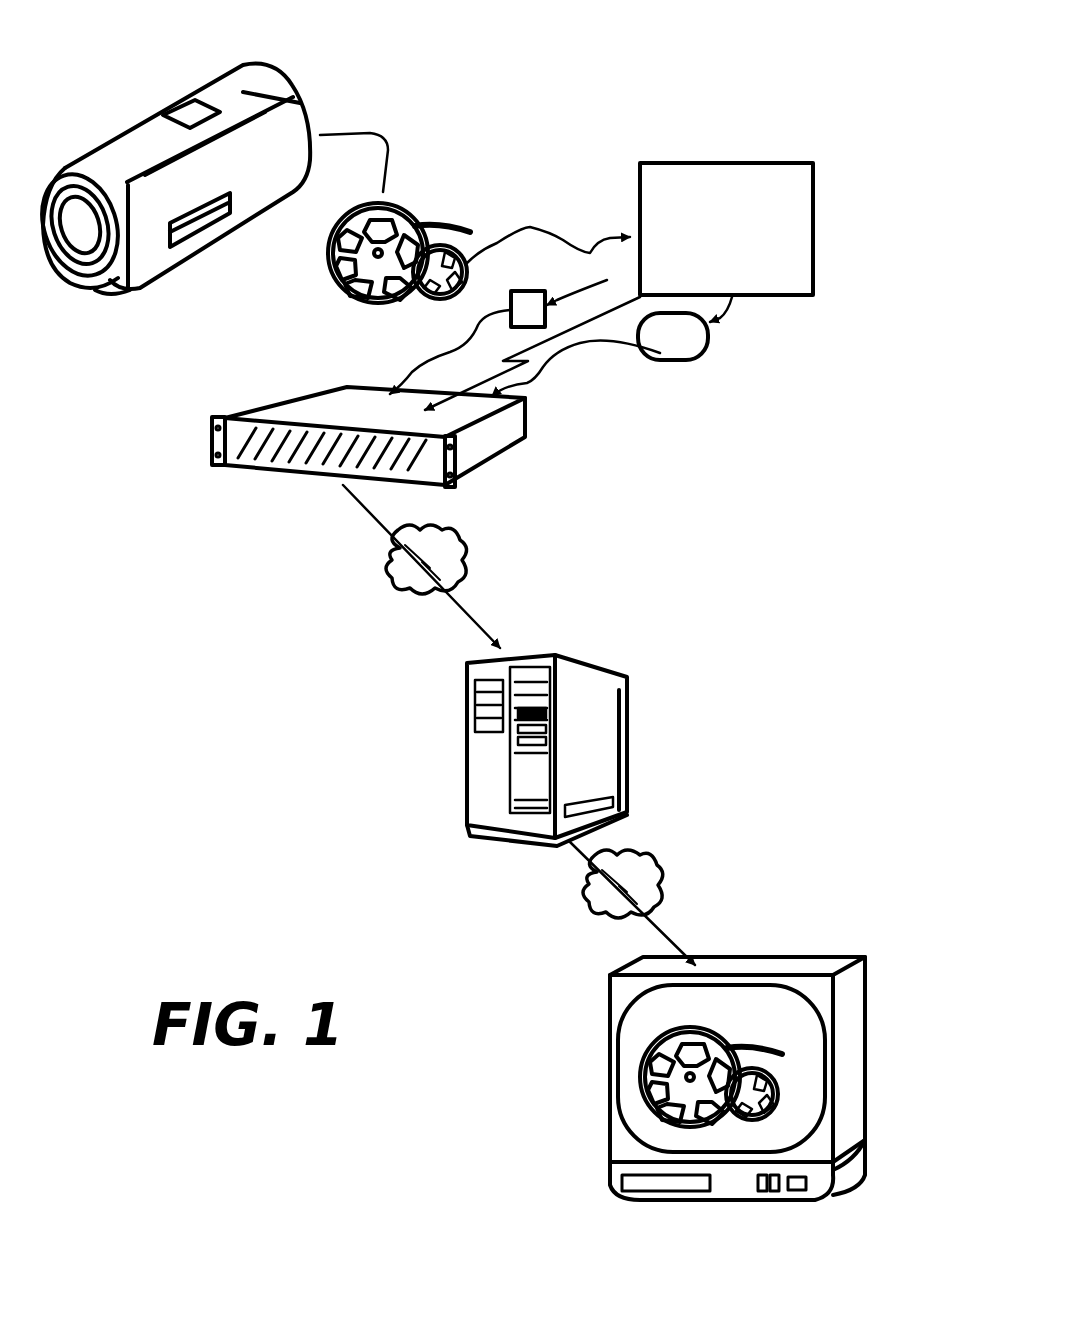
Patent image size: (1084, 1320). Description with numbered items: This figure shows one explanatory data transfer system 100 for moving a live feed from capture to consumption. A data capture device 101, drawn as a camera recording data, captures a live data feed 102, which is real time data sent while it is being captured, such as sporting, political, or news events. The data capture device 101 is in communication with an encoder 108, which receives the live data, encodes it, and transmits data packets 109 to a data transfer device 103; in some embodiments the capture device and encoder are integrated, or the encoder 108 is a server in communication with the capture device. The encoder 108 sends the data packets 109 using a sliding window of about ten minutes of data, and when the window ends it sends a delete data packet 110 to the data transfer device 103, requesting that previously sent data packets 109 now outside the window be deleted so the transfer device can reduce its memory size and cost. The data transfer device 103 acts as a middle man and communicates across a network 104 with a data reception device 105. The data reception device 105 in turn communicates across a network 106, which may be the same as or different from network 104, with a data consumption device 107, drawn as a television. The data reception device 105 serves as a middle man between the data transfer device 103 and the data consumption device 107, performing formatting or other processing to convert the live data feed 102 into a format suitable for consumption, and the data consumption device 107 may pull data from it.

The data transfer system 100 is at (875, 640).
The data capture device 101 is at (297, 122).
The live data feed 102 is at (455, 200).
The data transfer device 103 is at (515, 426).
The network 104 is at (465, 558).
The data reception device 105 is at (627, 685).
The network 106 is at (660, 862).
The data consumption device 107 is at (787, 975).
The encoder 108 is at (815, 178).
The data packets 109 is at (527, 290).
The delete data packet 110 is at (708, 340).